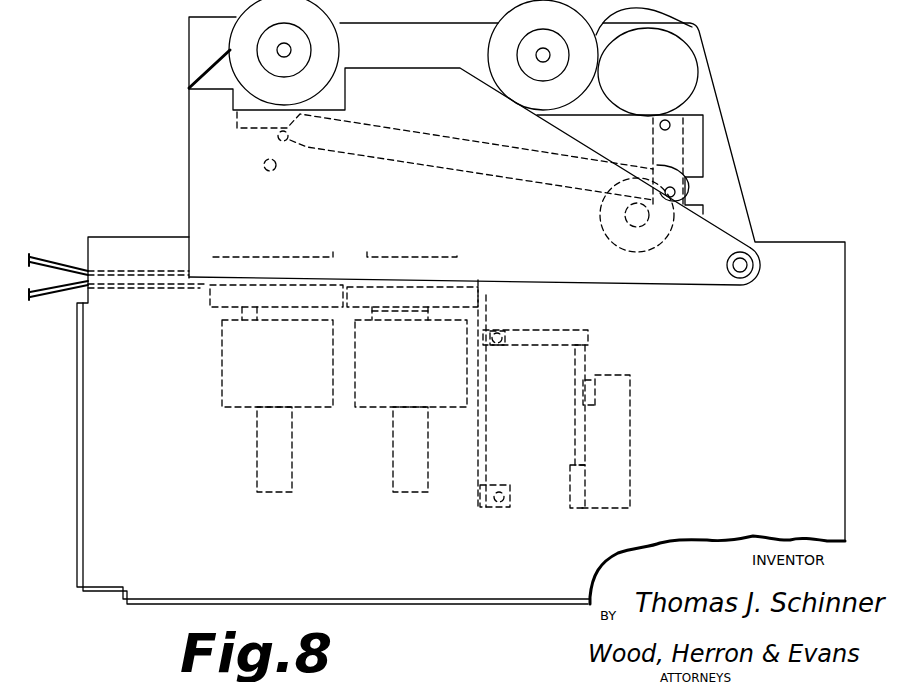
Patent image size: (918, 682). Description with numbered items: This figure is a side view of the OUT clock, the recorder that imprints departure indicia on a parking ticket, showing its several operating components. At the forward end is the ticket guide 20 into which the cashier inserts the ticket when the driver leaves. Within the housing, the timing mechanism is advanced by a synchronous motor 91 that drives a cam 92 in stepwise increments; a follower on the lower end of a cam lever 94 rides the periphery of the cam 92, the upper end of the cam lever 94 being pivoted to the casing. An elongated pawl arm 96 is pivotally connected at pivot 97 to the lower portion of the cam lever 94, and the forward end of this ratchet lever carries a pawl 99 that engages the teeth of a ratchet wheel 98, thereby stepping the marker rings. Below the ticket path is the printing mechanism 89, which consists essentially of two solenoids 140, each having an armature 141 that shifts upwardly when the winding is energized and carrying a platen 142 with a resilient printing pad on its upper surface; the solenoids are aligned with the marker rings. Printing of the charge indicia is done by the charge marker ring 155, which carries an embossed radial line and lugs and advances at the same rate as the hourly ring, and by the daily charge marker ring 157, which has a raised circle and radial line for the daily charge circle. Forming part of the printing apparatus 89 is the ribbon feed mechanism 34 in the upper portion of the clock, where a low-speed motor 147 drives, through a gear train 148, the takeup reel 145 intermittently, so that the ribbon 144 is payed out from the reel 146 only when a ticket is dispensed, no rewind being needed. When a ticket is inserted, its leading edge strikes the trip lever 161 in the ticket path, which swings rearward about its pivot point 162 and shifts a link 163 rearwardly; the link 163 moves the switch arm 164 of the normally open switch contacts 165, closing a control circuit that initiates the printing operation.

The ticket guide 20 is at (66, 276).
The ribbon feed mechanism 34 is at (722, 62).
The printing mechanism 89 is at (336, 478).
The synchronous motor 91 is at (663, 233).
The cam 92 is at (610, 208).
The cam lever 94 is at (683, 150).
The pawl arm 96 is at (485, 177).
The pivot 97 is at (684, 192).
The ratchet wheel 98 is at (302, 162).
The pawl 99 is at (292, 137).
The solenoid 140 is at (373, 410).
The armature 141 is at (284, 493).
The platen 142 is at (243, 323).
The ribbon 144 is at (189, 76).
The takeup reel 145 is at (543, 55).
The reel 146 is at (284, 52).
The motor 147 is at (648, 72).
The gear train 148 is at (645, 13).
The charge marker ring 155 is at (265, 257).
The daily charge marker ring 157 is at (402, 257).
The trip lever 161 is at (487, 302).
The pivot point 162 is at (498, 502).
The link 163 is at (575, 331).
The switch arm 164 is at (588, 358).
The switch contacts 165 is at (598, 406).